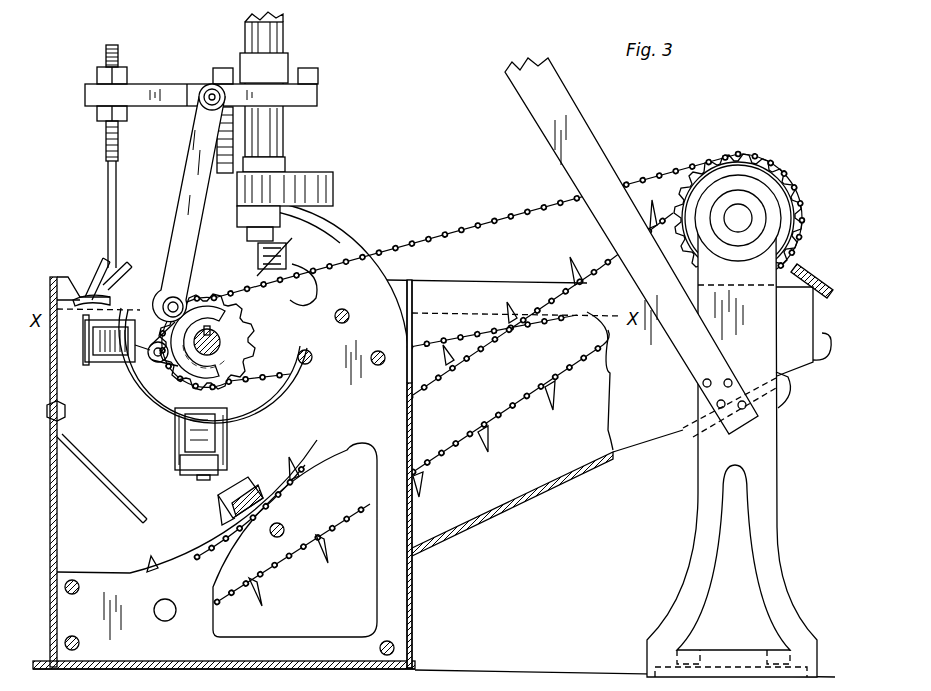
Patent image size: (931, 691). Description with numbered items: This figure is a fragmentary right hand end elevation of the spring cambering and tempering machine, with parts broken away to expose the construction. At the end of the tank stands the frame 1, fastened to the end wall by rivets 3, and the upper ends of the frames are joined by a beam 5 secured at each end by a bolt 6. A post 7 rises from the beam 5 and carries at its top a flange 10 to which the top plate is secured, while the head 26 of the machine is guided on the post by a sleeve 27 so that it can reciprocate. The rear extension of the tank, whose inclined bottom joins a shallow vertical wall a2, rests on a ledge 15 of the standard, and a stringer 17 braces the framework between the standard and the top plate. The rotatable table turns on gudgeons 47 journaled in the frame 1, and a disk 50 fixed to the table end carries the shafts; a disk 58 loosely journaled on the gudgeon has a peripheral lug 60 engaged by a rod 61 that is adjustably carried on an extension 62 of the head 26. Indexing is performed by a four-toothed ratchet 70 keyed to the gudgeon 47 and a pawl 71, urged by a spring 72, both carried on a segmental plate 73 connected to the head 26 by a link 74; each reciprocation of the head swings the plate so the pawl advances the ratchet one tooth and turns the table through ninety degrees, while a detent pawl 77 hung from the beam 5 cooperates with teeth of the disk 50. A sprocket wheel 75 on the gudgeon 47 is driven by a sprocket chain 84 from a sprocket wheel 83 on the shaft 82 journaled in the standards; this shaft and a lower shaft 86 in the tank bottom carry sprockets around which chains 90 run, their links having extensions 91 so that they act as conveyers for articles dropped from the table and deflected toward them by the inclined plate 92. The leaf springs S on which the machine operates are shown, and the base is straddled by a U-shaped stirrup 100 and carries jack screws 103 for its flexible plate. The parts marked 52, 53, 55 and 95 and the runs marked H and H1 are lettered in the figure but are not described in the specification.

The frame 1 is at (407, 418).
The rivets 3 is at (350, 314).
The beam 5 is at (330, 176).
The bolt 6 is at (275, 165).
The post 7 is at (280, 120).
The flanges 10 is at (763, 459).
The ledges 15 is at (788, 378).
The stringers 17 is at (548, 110).
The head 26 is at (308, 97).
The sleeve 27 is at (290, 60).
The gudgeons 47 is at (232, 327).
The disk 50 is at (218, 404).
The finger 52 is at (100, 270).
The finger 53 is at (114, 273).
The finger 55 is at (83, 297).
The disk 58 is at (263, 383).
The peripheral lug 60 is at (52, 280).
The rod 61 is at (106, 164).
The extension 62 is at (158, 96).
The four-toothed ratchet 70 is at (160, 362).
The pawl 71 is at (143, 357).
The spring 72 is at (170, 292).
The segmental plate 73 is at (256, 252).
The link 74 is at (196, 182).
The sprocket wheel 75 is at (183, 367).
The detent pawl 77 is at (300, 285).
The shaft 82 is at (740, 222).
The sprocket wheel 83 is at (748, 153).
The sprocket chain 84 is at (478, 232).
The shaft 86 is at (168, 614).
The chains 90 is at (507, 417).
The extensions 91 is at (488, 438).
The inclined plate 92 is at (97, 473).
The pivot pin 95 is at (225, 118).
The U-shaped stirrup 100 is at (225, 135).
The jack screws 103 is at (227, 438).
The conveyor H is at (295, 540).
The conveyor trough H1 is at (535, 485).
The springs S is at (233, 493).
The shallow vertical wall a2 is at (815, 362).